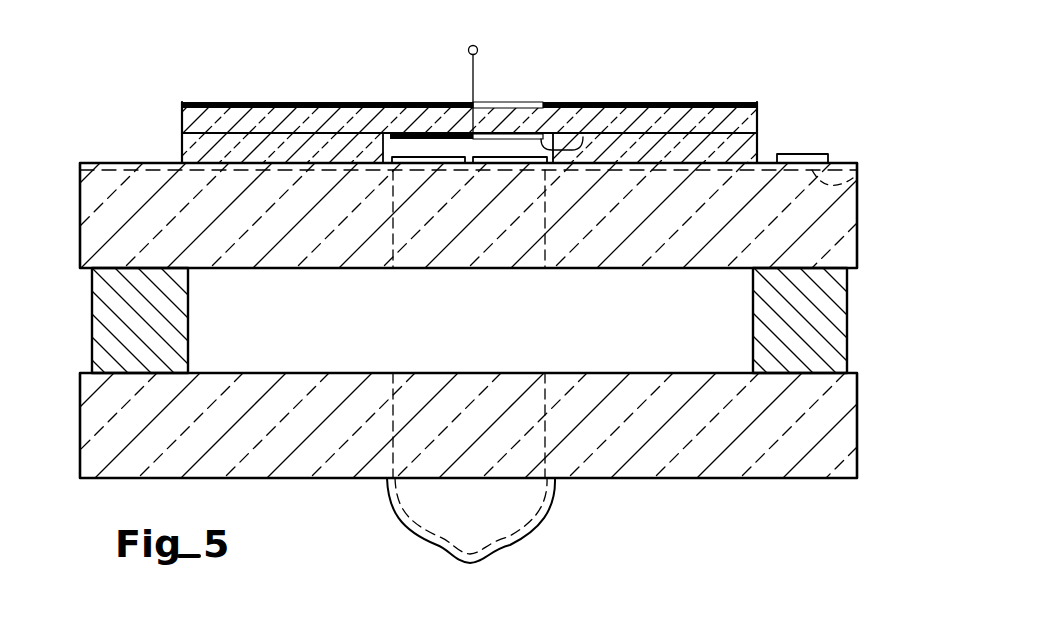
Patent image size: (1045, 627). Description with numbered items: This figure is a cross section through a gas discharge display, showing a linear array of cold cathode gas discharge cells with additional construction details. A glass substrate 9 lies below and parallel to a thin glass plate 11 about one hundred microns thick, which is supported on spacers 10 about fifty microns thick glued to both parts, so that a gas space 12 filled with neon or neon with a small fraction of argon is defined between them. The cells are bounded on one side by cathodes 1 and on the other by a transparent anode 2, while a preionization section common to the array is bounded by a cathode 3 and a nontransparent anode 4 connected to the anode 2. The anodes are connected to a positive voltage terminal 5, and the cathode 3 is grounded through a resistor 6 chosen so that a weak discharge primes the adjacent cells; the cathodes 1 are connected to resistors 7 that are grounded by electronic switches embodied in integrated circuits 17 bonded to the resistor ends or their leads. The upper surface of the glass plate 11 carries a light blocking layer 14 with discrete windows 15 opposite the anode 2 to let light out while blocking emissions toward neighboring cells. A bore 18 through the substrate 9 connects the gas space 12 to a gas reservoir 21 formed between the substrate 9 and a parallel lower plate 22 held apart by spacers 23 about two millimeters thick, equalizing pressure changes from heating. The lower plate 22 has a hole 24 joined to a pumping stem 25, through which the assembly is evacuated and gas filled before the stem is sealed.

The cathodes 1 is at (490, 166).
The transparent anode 2 is at (578, 134).
The cathode 3 is at (445, 166).
The nontransparent anode 4 is at (391, 141).
The positive voltage terminal 5 is at (479, 51).
The resistor 6 is at (78, 182).
The resistors 7 is at (860, 172).
The glass substrate 9 is at (80, 240).
The spacers 10 is at (757, 152).
The thin glass plate 11 is at (757, 123).
The gas space 12 is at (503, 150).
The light blocking layer 14 is at (320, 102).
The windows 15 is at (523, 102).
The integrated circuits 17 is at (820, 154).
The bore 18 is at (545, 205).
The gas reservoir 21 is at (730, 296).
The lower plate 22 is at (735, 474).
The spacers 23 is at (833, 353).
The hole 24 is at (547, 447).
The pumping stem 25 is at (513, 551).